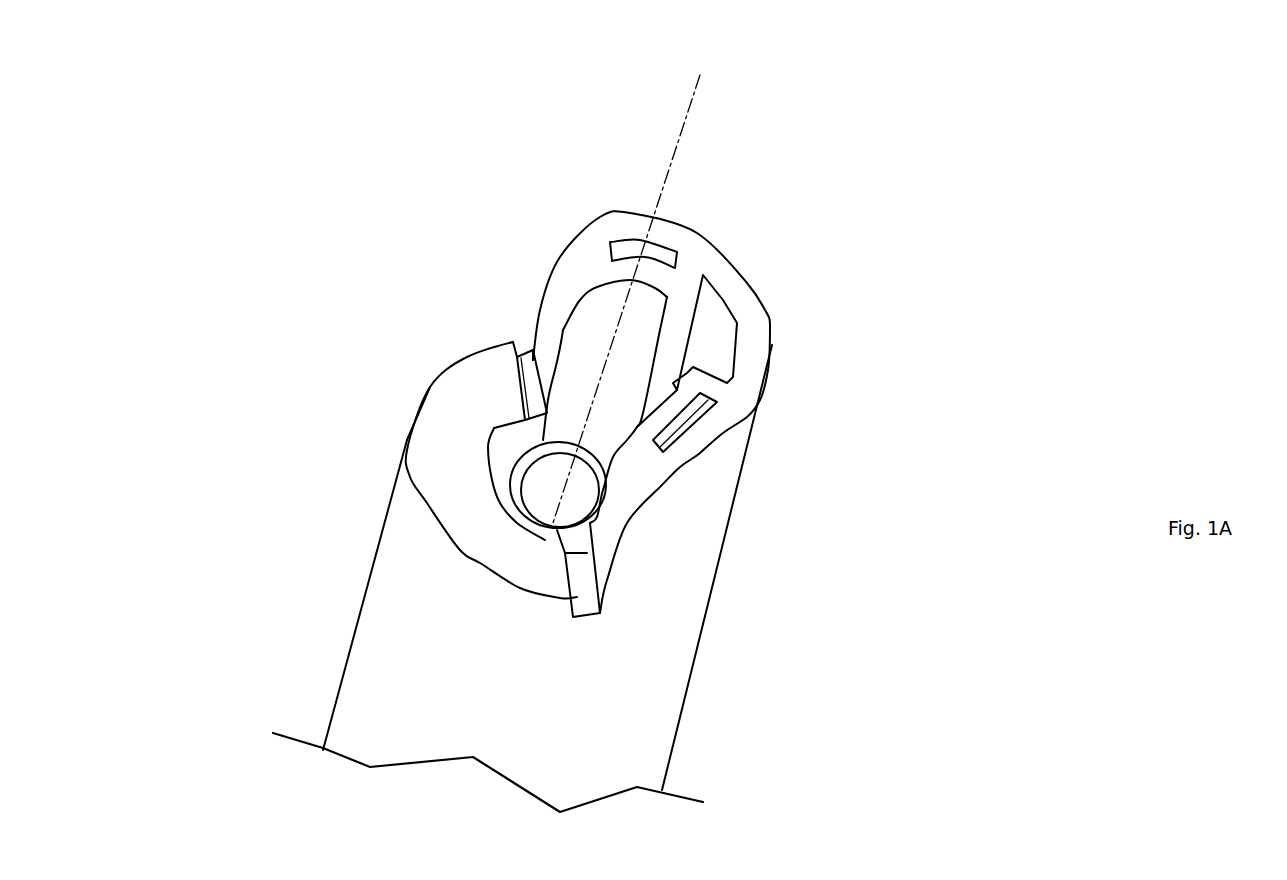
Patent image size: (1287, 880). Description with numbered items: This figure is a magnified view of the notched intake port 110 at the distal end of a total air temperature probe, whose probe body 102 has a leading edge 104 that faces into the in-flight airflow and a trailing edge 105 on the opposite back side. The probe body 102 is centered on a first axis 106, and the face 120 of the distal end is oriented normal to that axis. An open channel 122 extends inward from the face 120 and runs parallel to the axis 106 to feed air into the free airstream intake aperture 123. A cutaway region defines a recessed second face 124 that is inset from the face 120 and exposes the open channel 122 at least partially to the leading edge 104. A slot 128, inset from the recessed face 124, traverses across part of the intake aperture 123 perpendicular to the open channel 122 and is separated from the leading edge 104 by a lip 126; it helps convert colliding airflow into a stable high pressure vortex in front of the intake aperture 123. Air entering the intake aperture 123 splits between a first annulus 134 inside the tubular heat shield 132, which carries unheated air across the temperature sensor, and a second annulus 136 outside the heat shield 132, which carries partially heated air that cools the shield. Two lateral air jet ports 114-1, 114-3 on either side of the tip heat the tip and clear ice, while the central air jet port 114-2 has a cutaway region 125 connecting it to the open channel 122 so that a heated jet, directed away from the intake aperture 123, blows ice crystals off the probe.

The probe body 102 is at (350, 645).
The leading edge 104 is at (378, 540).
The trailing edge 105 is at (690, 688).
The first axis 106 is at (700, 93).
The notched intake port 110 is at (802, 522).
The lateral air jet port 114-1 is at (622, 247).
The central air jet port 114-2 is at (730, 297).
The lateral air jet port 114-3 is at (697, 425).
The face 120 is at (757, 320).
The open channel 122 is at (623, 313).
The intake aperture 123 is at (555, 375).
The recessed second face 124 is at (485, 451).
The cutaway region 125 is at (677, 320).
The lip 126 is at (407, 450).
The slot 128 is at (580, 622).
The tubular heat shield 132 is at (590, 460).
The first annulus 134 is at (560, 480).
The second annulus 136 is at (497, 455).